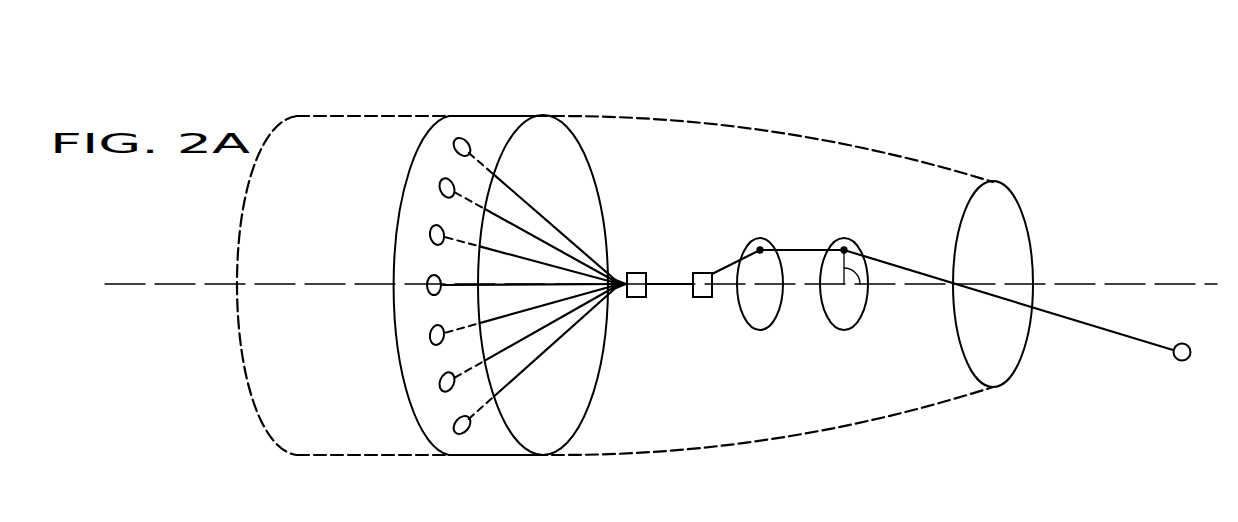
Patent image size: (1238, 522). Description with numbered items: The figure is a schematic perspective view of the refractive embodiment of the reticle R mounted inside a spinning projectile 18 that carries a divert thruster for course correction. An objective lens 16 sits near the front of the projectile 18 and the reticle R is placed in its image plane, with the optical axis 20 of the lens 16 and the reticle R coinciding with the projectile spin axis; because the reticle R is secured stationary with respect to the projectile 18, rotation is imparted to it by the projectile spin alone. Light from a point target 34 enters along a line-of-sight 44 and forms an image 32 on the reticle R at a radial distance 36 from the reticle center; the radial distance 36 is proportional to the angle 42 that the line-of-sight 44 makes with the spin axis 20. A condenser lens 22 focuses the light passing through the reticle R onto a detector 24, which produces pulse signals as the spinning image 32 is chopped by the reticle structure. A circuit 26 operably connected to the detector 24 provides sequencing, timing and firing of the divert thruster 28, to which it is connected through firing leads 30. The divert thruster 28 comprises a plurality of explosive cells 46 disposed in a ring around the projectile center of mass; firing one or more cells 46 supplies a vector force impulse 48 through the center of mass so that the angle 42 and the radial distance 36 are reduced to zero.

The objective lens 16 is at (1005, 366).
The spinning projectile 18 is at (358, 103).
The optical axis 20 is at (308, 283).
The condenser lens 22 is at (760, 330).
The detector 24 is at (706, 300).
The circuit 26 is at (633, 300).
The divert thruster 28 is at (493, 130).
The firing leads 30 is at (557, 223).
The image 32 is at (847, 238).
The point target 34 is at (1181, 362).
The radial distance 36 is at (867, 297).
The angle 42 is at (1132, 285).
The line-of-sight 44 is at (1097, 327).
The explosive cells 46 is at (432, 352).
The vector force impulse 48 is at (492, 64).
The reticle R is at (843, 334).